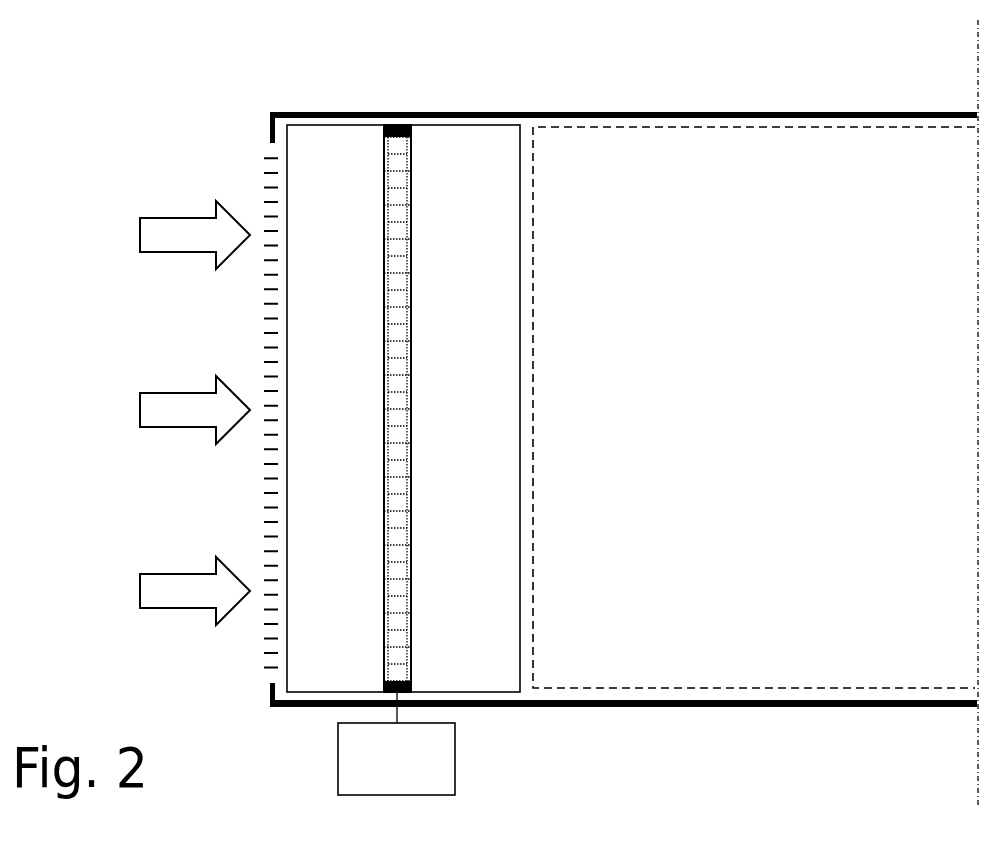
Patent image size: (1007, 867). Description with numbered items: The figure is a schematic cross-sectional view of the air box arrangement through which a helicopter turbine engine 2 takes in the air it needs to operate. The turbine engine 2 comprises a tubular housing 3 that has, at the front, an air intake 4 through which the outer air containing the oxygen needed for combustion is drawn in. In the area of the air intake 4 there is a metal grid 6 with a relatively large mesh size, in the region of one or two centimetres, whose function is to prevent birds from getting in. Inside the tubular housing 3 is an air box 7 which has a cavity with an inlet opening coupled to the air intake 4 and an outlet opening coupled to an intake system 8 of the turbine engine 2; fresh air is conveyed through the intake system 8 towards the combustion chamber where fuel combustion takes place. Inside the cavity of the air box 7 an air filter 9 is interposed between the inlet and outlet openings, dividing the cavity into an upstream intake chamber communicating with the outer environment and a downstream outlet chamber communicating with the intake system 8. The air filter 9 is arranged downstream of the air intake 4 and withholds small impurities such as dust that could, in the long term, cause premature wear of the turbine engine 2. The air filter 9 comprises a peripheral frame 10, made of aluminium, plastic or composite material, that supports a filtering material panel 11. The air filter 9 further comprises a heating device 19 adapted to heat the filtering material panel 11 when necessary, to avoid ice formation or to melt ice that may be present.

The turbine engine 2 is at (613, 781).
The tubular housing 3 is at (729, 112).
The air intake 4 is at (222, 458).
The metal grid 6 is at (276, 305).
The air box 7 is at (483, 125).
The intake system 8 is at (857, 180).
The air filter 9 is at (356, 280).
The peripheral frame 10 is at (413, 689).
The filtering material panel 11 is at (412, 535).
The heating device 19 is at (396, 743).